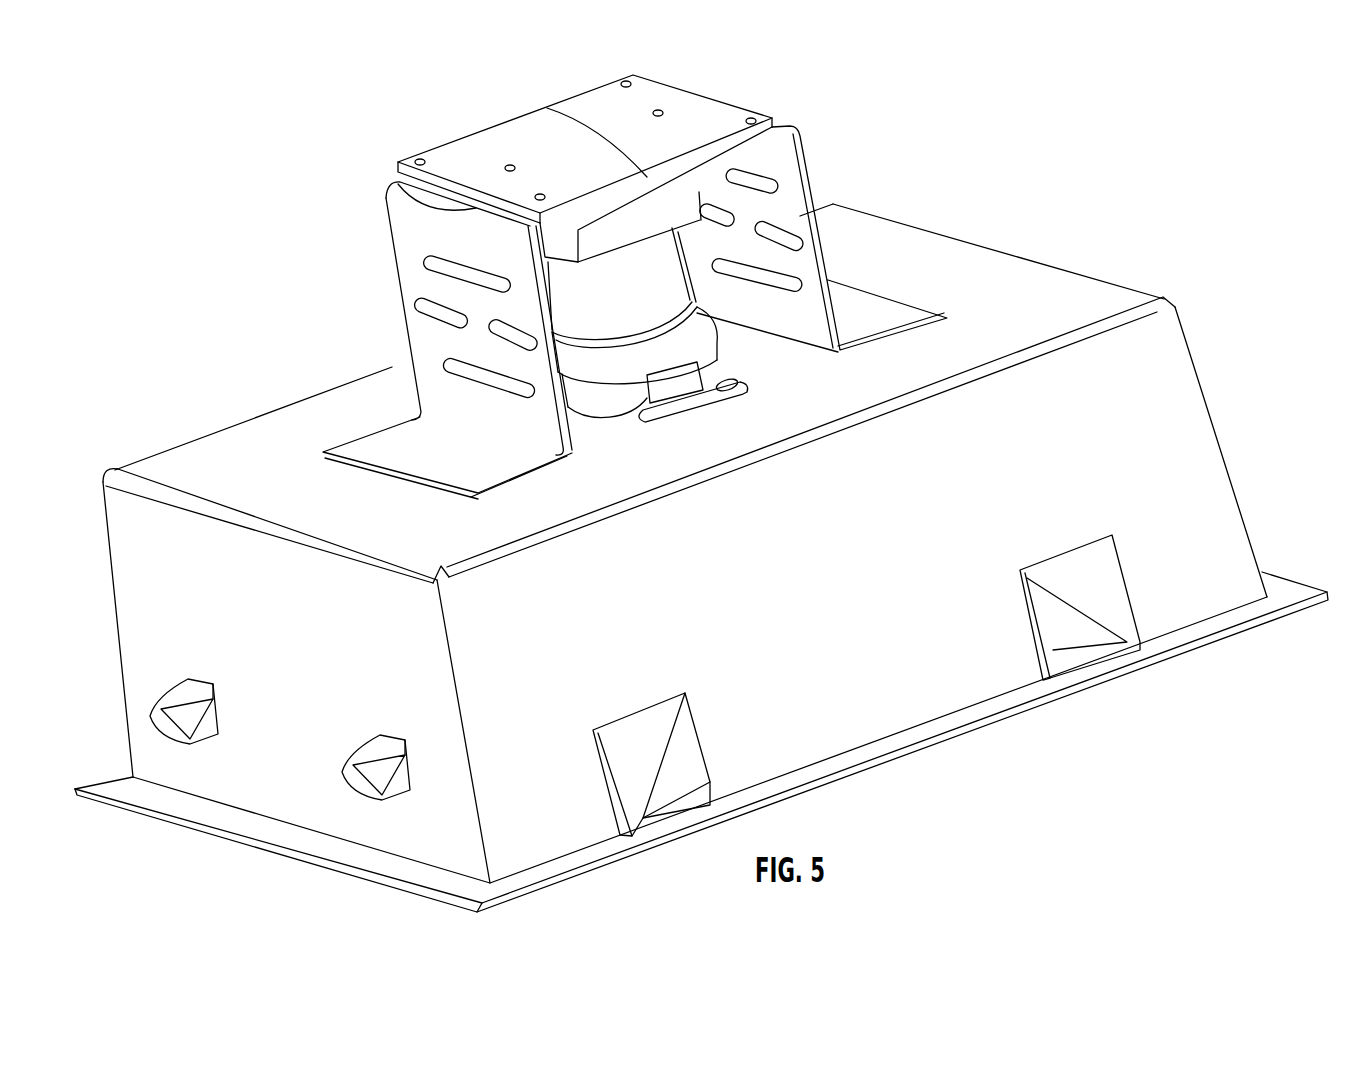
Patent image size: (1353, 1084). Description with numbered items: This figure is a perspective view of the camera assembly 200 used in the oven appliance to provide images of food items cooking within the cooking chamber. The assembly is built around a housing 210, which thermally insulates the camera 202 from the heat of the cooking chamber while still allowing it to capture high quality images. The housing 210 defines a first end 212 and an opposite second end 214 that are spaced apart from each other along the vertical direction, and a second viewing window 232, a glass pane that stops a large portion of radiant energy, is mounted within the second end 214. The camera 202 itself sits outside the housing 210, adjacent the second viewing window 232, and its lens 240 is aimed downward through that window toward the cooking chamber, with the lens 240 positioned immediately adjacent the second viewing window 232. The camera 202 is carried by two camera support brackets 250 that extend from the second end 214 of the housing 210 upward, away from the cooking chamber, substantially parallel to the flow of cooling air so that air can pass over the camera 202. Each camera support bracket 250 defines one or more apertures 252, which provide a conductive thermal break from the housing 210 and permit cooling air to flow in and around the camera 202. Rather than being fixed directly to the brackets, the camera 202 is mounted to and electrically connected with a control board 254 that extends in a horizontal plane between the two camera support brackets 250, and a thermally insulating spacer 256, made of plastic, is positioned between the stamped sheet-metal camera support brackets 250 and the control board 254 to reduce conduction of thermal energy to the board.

The camera assembly 200 is at (807, 98).
The camera 202 is at (650, 292).
The housing 210 is at (701, 586).
The first end 212 is at (477, 924).
The second end 214 is at (1000, 276).
The second viewing window 232 is at (592, 400).
The lens 240 is at (706, 360).
The camera support bracket 250 is at (785, 172).
The aperture 252 is at (423, 312).
The control board 254 is at (547, 108).
The thermally insulating spacer 256 is at (437, 327).